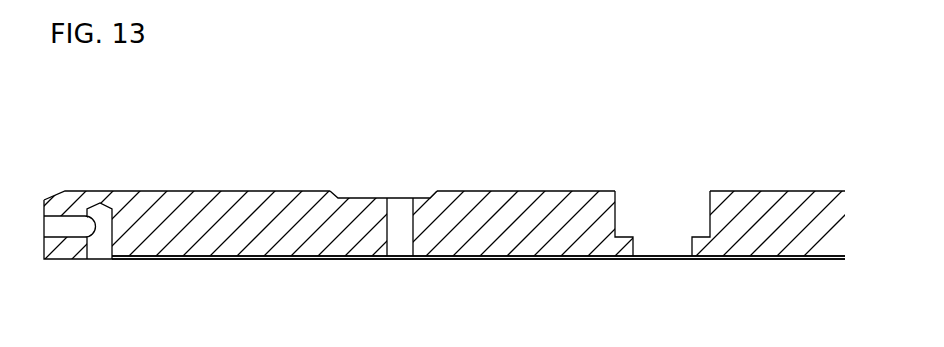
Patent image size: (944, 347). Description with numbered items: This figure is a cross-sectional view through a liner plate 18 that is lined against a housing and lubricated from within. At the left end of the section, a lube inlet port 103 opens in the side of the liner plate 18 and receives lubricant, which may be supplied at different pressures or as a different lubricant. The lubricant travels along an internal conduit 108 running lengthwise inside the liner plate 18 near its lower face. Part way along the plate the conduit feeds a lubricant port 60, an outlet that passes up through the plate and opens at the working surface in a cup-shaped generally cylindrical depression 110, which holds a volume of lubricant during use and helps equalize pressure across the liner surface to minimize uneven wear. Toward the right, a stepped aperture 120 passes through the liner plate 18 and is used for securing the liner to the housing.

The liner plate 18 is at (829, 225).
The lube inlet port 103 is at (44, 228).
The cup-shaped generally cylindrical depression 110 is at (428, 197).
The lubricant port 60 is at (400, 206).
The aperture 120 is at (655, 210).
The internal conduit 108 is at (231, 256).